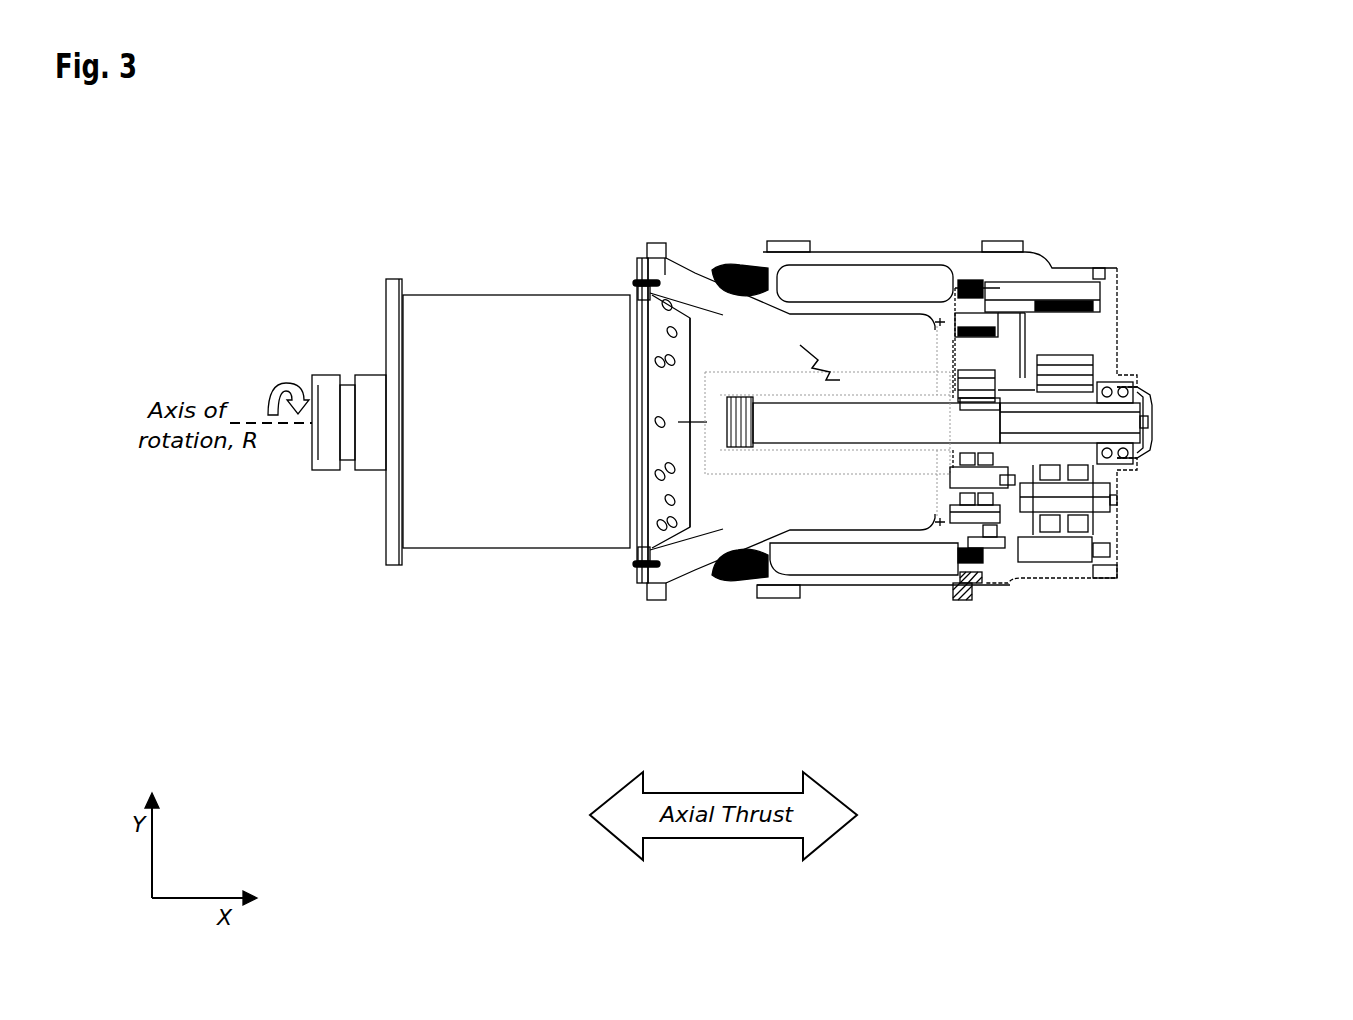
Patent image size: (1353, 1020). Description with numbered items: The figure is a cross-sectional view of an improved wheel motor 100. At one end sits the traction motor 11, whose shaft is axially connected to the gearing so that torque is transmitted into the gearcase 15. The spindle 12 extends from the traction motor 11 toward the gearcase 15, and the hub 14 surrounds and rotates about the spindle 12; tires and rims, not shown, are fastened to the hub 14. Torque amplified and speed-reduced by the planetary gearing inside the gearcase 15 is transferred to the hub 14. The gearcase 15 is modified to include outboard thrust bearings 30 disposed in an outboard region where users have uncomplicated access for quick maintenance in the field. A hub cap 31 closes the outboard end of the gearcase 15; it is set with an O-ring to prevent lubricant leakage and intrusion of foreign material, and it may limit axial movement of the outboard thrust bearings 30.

The traction motor 11 is at (523, 327).
The spindle 12 is at (747, 380).
The hub 14 is at (914, 345).
The gearcase 15 is at (1146, 410).
The outboard thrust bearings 30 is at (1216, 483).
The hub cap 31 is at (1216, 420).
The wheel motor 100 is at (1145, 665).